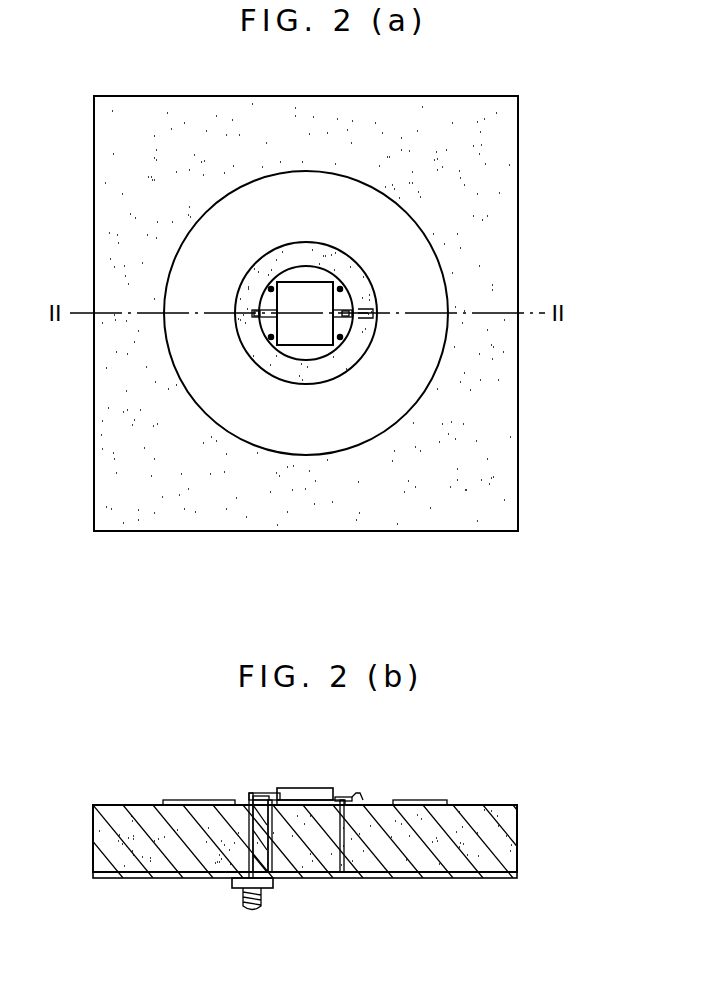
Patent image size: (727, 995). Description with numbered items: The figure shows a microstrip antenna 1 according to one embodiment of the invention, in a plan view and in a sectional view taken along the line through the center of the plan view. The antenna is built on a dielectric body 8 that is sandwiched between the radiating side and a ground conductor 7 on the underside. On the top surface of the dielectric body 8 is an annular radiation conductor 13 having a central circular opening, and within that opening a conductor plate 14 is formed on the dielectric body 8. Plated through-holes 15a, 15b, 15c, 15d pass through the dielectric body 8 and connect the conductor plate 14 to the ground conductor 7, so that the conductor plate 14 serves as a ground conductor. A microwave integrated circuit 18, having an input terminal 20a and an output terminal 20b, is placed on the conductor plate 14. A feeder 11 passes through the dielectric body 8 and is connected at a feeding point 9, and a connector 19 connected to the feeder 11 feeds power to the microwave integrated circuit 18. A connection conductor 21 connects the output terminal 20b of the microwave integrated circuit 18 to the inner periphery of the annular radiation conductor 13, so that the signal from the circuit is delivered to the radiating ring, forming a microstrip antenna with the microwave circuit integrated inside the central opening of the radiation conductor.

In FIG. 2A, the microstrip antenna 1 is at (540, 123).
In FIG. 2B, the microstrip antenna 1 is at (533, 830).
In FIG. 2B, the ground conductor 7 is at (468, 879).
In FIG. 2A, the dielectric body 8 is at (483, 460).
In FIG. 2B, the dielectric body 8 is at (488, 820).
In FIG. 2A, the feeding point 9 is at (253, 310).
In FIG. 2B, the feeding point 9 is at (248, 795).
In FIG. 2B, the feeder 11 is at (247, 843).
In FIG. 2A, the annular radiation conductor 13 is at (406, 228).
In FIG. 2B, the annular radiation conductor 13 is at (415, 800).
In FIG. 2A, the conductor plate 14 is at (372, 298).
In FIG. 2B, the conductor plate 14 is at (270, 798).
In FIG. 2A, the plated through-hole 15a is at (265, 347).
In FIG. 2B, the plated through-hole 15a is at (295, 845).
In FIG. 2A, the plated through-hole 15b is at (271, 287).
In FIG. 2B, the plated through-hole 15b is at (347, 847).
In FIG. 2A, the plated through-hole 15c is at (341, 287).
In FIG. 2A, the plated through-hole 15d is at (348, 347).
In FIG. 2A, the microwave integrated circuit 18 is at (310, 290).
In FIG. 2B, the microwave integrated circuit 18 is at (310, 789).
In FIG. 2B, the connector 19 is at (240, 900).
In FIG. 2A, the input terminal 20a is at (270, 339).
In FIG. 2B, the input terminal 20a is at (255, 796).
In FIG. 2A, the output terminal 20b is at (342, 339).
In FIG. 2B, the output terminal 20b is at (341, 797).
In FIG. 2A, the connection conductor 21 is at (370, 326).
In FIG. 2B, the connection conductor 21 is at (360, 793).